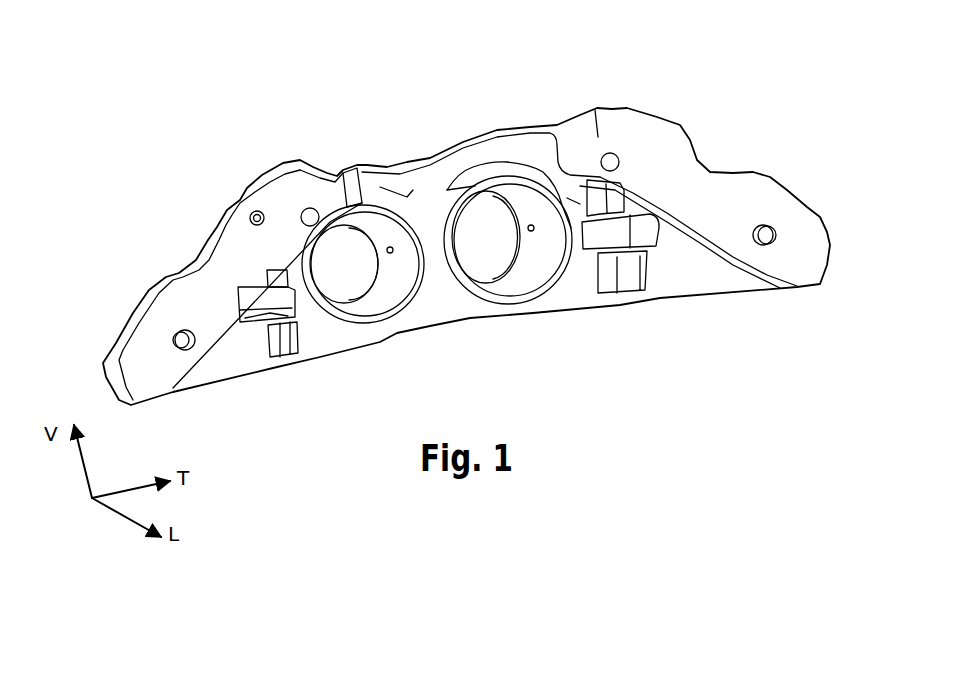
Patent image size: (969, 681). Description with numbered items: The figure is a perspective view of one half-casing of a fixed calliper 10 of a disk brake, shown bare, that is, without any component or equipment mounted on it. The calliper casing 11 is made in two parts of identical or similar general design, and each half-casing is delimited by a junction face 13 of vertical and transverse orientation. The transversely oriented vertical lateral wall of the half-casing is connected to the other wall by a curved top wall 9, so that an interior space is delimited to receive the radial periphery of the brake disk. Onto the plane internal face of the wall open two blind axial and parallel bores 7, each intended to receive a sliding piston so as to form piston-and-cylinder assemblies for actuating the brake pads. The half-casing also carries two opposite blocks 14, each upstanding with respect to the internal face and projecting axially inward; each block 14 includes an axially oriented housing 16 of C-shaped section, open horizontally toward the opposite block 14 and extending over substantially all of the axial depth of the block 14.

The blind axial bore 7 is at (399, 262).
The curved top wall 9 is at (727, 250).
The fixed calliper 10 is at (770, 143).
The calliper casing 11 is at (653, 110).
The junction face 13 is at (760, 200).
The block 14 is at (288, 348).
The housing 16 is at (278, 293).